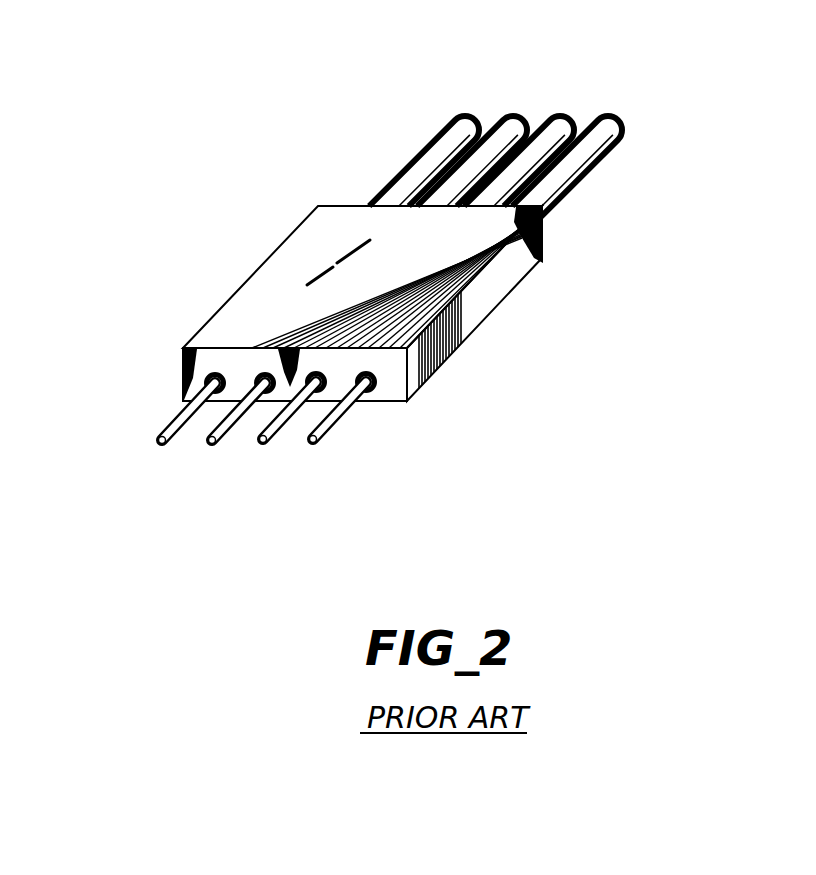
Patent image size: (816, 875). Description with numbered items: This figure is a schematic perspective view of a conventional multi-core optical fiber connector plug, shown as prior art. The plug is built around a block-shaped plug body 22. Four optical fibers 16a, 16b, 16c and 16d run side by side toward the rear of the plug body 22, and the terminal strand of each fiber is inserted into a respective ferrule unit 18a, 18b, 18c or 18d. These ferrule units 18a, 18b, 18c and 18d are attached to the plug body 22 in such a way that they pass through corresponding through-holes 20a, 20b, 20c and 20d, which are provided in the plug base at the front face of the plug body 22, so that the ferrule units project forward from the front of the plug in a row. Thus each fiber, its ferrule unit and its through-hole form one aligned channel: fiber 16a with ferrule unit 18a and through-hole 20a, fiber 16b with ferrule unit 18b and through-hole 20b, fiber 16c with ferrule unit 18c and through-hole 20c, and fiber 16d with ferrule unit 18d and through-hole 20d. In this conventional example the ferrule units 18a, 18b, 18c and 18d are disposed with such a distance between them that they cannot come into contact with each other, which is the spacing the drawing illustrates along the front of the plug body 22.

The optical fiber 16a is at (462, 114).
The optical fiber 16b is at (512, 113).
The optical fiber 16c is at (562, 115).
The optical fiber 16d is at (612, 112).
The ferrule unit 18a is at (163, 428).
The ferrule unit 18b is at (222, 442).
The ferrule unit 18c is at (282, 440).
The ferrule unit 18d is at (328, 428).
The through-hole 20a is at (217, 381).
The through-hole 20b is at (265, 380).
The through-hole 20c is at (316, 378).
The through-hole 20d is at (378, 383).
The plug body 22 is at (345, 218).